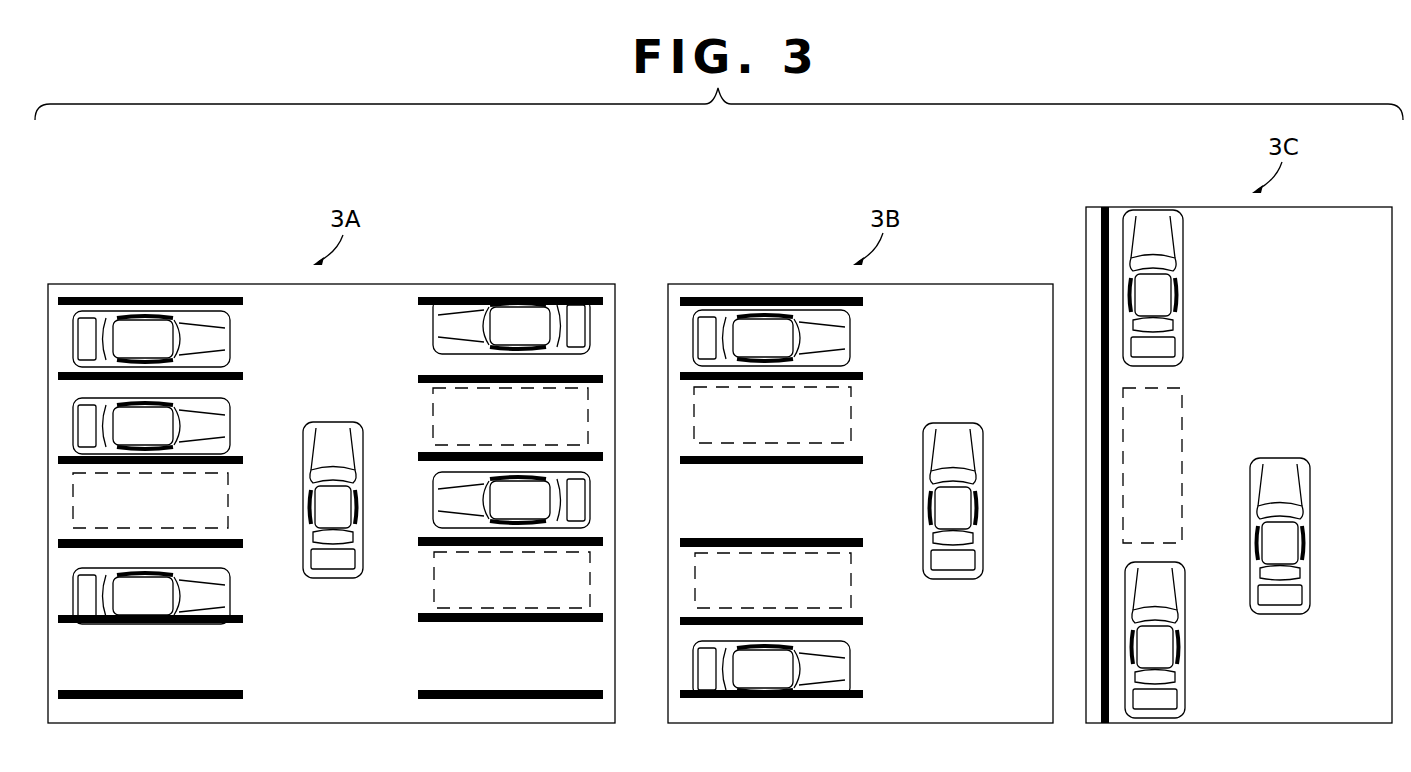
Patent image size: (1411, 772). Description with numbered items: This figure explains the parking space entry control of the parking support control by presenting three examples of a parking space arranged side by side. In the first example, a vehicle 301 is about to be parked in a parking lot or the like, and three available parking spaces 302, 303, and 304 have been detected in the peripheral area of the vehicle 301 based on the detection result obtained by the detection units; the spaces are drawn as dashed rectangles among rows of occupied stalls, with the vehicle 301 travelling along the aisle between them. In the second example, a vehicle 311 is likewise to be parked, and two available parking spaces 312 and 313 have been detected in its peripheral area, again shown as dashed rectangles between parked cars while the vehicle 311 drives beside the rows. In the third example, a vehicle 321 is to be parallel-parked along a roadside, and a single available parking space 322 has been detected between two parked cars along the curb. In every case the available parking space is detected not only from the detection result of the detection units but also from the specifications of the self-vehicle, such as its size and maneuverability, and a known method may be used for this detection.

The vehicle 301 is at (340, 424).
The available parking space 302 is at (228, 490).
The available parking space 303 is at (588, 411).
The available parking space 304 is at (590, 572).
The vehicle 311 is at (995, 418).
The available parking space 312 is at (851, 407).
The available parking space 313 is at (851, 569).
The vehicle 321 is at (1313, 449).
The available parking space 322 is at (1182, 418).